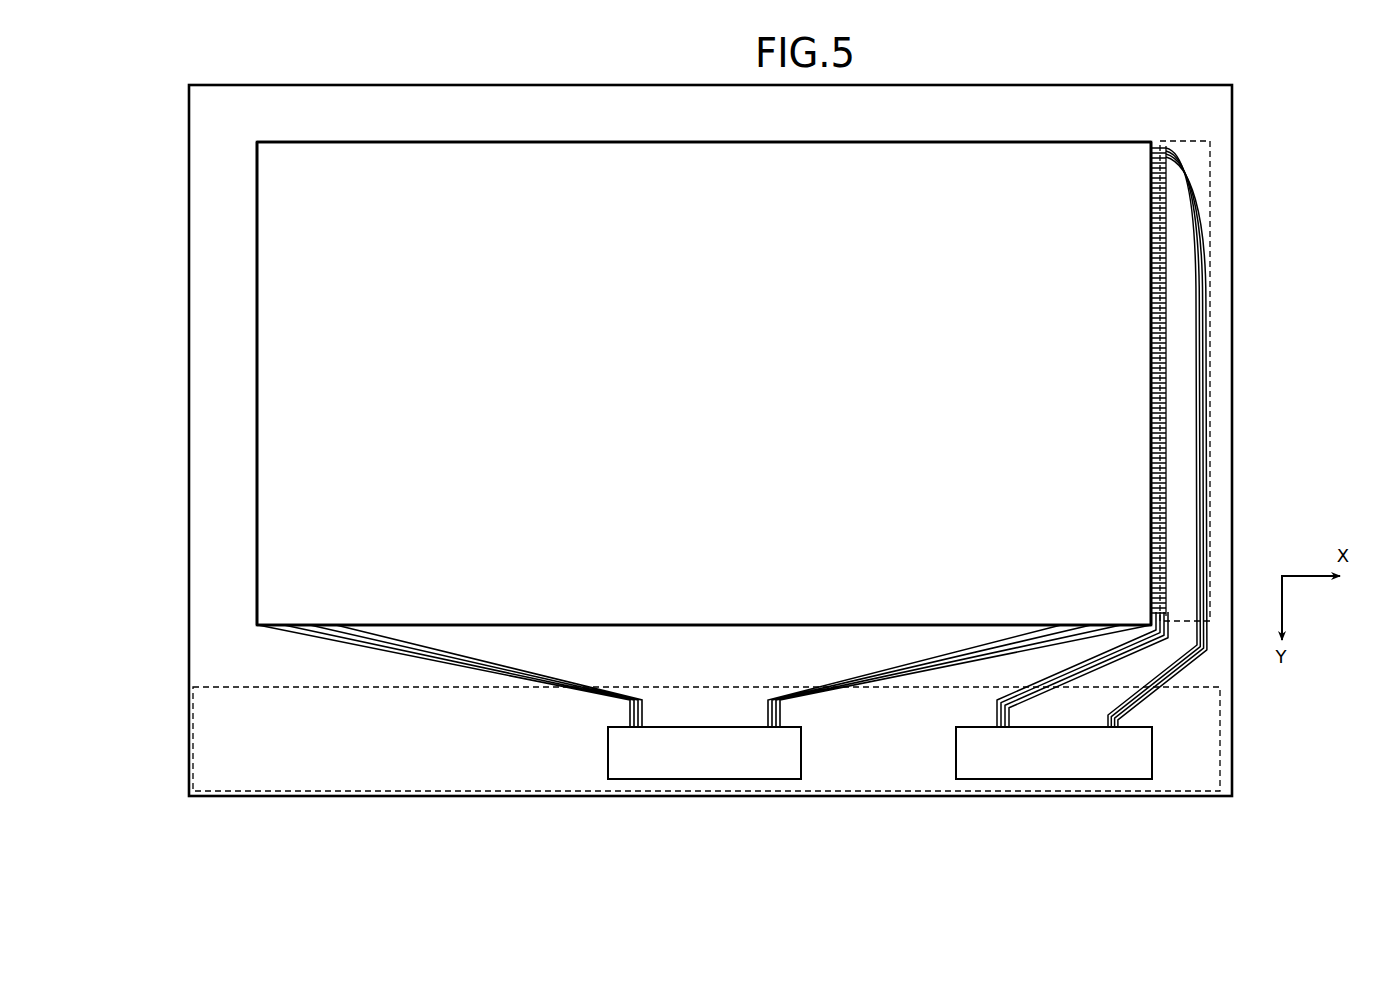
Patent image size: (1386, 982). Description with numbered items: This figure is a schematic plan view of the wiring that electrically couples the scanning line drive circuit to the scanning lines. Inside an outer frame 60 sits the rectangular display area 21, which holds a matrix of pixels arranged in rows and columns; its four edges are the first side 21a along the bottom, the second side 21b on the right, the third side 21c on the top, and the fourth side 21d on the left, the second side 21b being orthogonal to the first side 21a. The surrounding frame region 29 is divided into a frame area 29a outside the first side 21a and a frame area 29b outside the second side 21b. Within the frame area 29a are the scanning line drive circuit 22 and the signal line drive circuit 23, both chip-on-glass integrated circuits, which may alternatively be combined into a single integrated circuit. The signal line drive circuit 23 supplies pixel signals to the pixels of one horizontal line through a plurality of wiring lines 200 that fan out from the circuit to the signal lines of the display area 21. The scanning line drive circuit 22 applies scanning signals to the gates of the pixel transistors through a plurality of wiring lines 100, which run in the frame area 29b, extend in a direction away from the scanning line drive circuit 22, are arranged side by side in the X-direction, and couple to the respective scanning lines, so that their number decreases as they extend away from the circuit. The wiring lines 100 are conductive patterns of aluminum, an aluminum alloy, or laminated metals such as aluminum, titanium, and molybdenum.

The electronic apparatus housing 60 is at (246, 84).
The display area 21 is at (301, 160).
The first side 21a is at (753, 629).
The second side 21b is at (1160, 410).
The third side of substrate 21c is at (752, 136).
The fourth side of substrate 21d is at (252, 408).
The peripheral region 29 is at (741, 466).
The frame area 29a is at (224, 748).
The frame area 29b is at (1208, 308).
The wiring lines 100 is at (1209, 531).
The wiring lines 200 is at (417, 660).
The signal line drive circuit 23 is at (708, 780).
The scanning line drive circuit 22 is at (1054, 780).